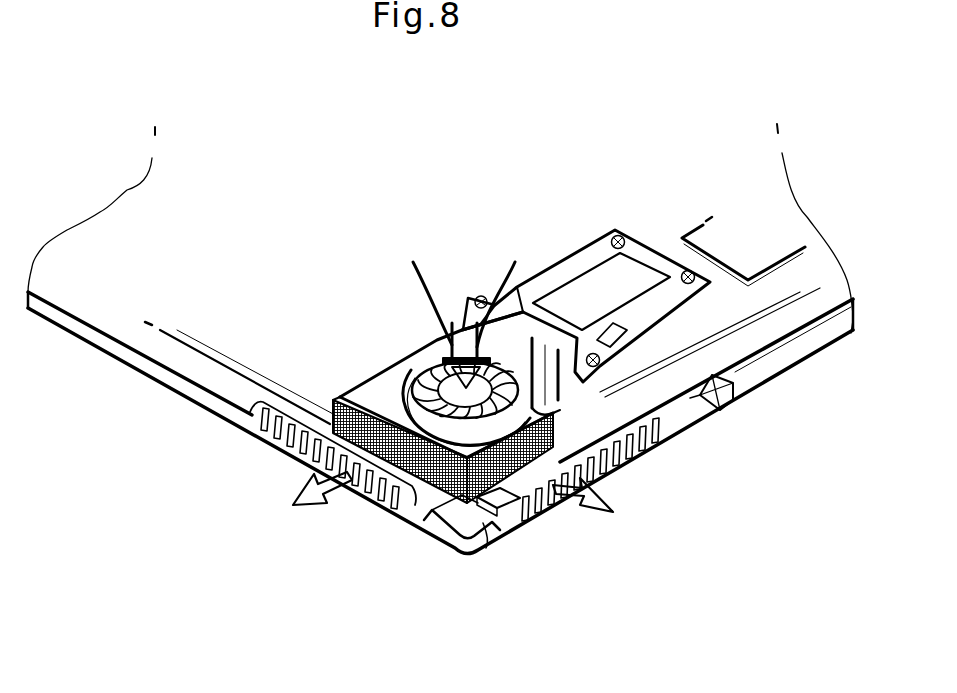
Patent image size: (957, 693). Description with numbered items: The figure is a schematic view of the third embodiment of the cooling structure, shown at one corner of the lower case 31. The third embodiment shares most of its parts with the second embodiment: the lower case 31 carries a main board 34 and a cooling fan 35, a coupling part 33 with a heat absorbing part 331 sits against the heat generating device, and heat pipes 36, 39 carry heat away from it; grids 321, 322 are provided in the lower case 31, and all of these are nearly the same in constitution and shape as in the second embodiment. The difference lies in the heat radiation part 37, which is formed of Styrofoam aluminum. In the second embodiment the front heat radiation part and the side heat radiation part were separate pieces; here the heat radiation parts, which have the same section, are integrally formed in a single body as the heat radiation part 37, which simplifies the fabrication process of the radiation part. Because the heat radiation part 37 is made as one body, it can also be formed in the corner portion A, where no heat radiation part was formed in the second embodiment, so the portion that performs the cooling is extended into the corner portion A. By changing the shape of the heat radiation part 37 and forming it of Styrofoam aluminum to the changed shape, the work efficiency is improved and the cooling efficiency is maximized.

The lower case 31 is at (760, 370).
The coupling part 33 is at (568, 270).
The heat absorbing part 331 is at (630, 270).
The main board 34 is at (805, 315).
The cooling fan 35 is at (422, 392).
The heat pipe 36 is at (338, 396).
The heat radiation part 37 is at (423, 513).
The heat pipe 39 is at (663, 407).
The grid 321 is at (383, 507).
The grid 322 is at (630, 450).
The corner portion A is at (487, 527).